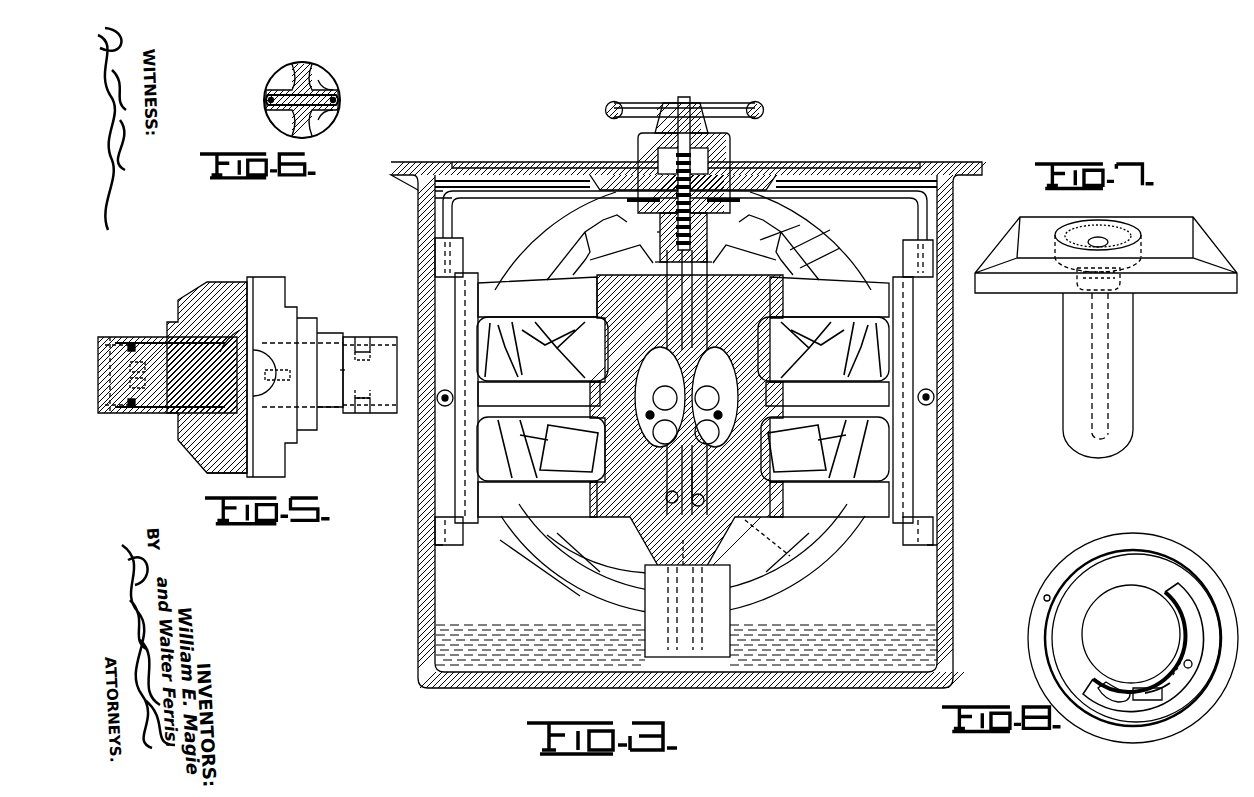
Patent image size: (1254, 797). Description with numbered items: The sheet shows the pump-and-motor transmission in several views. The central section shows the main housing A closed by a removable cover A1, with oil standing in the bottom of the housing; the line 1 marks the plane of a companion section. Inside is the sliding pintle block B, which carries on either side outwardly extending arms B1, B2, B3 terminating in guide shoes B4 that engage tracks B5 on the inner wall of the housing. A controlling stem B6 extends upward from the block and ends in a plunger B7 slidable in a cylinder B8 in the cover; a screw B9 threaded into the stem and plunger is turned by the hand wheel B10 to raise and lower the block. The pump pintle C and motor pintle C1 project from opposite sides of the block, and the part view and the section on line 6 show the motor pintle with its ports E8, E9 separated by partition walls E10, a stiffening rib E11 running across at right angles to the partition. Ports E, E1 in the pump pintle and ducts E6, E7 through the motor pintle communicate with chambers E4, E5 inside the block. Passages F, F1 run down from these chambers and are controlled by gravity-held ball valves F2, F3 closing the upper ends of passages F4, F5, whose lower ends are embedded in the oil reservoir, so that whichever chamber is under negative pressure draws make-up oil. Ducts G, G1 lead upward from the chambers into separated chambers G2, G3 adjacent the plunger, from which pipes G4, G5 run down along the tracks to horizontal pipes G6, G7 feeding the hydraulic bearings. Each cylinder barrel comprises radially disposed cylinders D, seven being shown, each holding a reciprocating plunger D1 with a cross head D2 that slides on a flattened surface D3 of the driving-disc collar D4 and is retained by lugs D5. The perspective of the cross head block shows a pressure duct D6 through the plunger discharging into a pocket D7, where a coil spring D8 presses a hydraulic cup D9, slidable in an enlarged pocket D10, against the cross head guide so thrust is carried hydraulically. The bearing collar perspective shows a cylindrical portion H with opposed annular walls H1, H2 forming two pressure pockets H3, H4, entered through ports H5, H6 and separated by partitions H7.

In FIG. 3, the section line 1- 1 is at (683, 100).
In FIG. 5, the section line 6— 6 is at (355, 453).
In FIG. 3, the main housing A is at (952, 503).
In FIG. 3, the removable cover A1 is at (818, 168).
In FIG. 3, the sliding pintle block B is at (742, 347).
In FIG. 5, the sliding pintle block B is at (272, 315).
In FIG. 3, the outwardly extending arm B1 is at (683, 297).
In FIG. 3, the outwardly extending arm B2 is at (545, 385).
In FIG. 3, the outwardly extending arm B3 is at (683, 499).
In FIG. 3, the guide shoe B4 is at (470, 274).
In FIG. 3, the track B5 is at (452, 258).
In FIG. 3, the controlling system B6 is at (657, 226).
In FIG. 3, the plunger B7 is at (712, 168).
In FIG. 5, the plunger B7 is at (272, 390).
In FIG. 3, the cylinder B8 is at (690, 165).
In FIG. 3, the screw B9 is at (638, 152).
In FIG. 3, the hand wheel B10 is at (612, 103).
In FIG. 5, the pump pintle C is at (105, 337).
In FIG. 5, the motor pintle C1 is at (385, 340).
In FIG. 6, the motor pintle C1 is at (276, 112).
In FIG. 3, the pump or motor cylinder D is at (683, 402).
In FIG. 3, the plunger D1 is at (568, 353).
In FIG. 7, the plunger D1 is at (1125, 322).
In FIG. 3, the cross head D2 is at (812, 268).
In FIG. 7, the cross head D2 is at (1180, 215).
In FIG. 3, the flattened surface D3 is at (792, 250).
In FIG. 3, the collar D4 is at (540, 558).
In FIG. 3, the lug D5 is at (770, 238).
In FIG. 7, the pressure duct D6 is at (1105, 364).
In FIG. 7, the pocket D7 is at (1077, 280).
In FIG. 7, the coil spring D8 is at (1120, 280).
In FIG. 7, the hydraulic cup D9 is at (1112, 228).
In FIG. 7, the enlarged pocket D10 is at (1050, 237).
In FIG. 3, the port E is at (686, 430).
In FIG. 5, the port E is at (142, 340).
In FIG. 5, the port E1 is at (140, 415).
In FIG. 3, the chamber E4 is at (660, 397).
In FIG. 5, the chamber E4 is at (205, 300).
In FIG. 3, the chamber E5 is at (715, 397).
In FIG. 5, the chamber E5 is at (210, 468).
In FIG. 3, the duct E6 is at (660, 432).
In FIG. 3, the duct E7 is at (712, 432).
In FIG. 5, the port E8 is at (350, 345).
In FIG. 6, the port E8 is at (282, 80).
In FIG. 5, the port E9 is at (362, 402).
In FIG. 6, the port E9 is at (322, 78).
In FIG. 5, the partition wall E10 is at (344, 385).
In FIG. 6, the partition wall E10 is at (300, 63).
In FIG. 6, the rib E11 is at (328, 98).
In FIG. 3, the passage F is at (705, 472).
In FIG. 3, the passage F1 is at (704, 500).
In FIG. 3, the ball valve F2 is at (666, 497).
In FIG. 3, the ball valve F3 is at (767, 548).
In FIG. 3, the passage F4 is at (668, 606).
In FIG. 3, the passage F5 is at (700, 547).
In FIG. 3, the duct G is at (657, 261).
In FIG. 3, the duct G1 is at (712, 261).
In FIG. 3, the chamber G2 is at (620, 176).
In FIG. 3, the chamber G3 is at (745, 178).
In FIG. 3, the pipe G4 is at (488, 200).
In FIG. 3, the pipe G5 is at (440, 208).
In FIG. 3, the horizontally disposed pipe G6 is at (445, 408).
In FIG. 3, the horizontally disposed pipe G7 is at (934, 397).
In FIG. 8, the cylindrical portion H is at (1092, 550).
In FIG. 8, the annular wall H1 is at (1112, 590).
In FIG. 8, the annular wall H2 is at (1138, 684).
In FIG. 8, the pressure pocket H3 is at (1115, 702).
In FIG. 8, the pressure pocket H4 is at (1165, 697).
In FIG. 8, the port H5 is at (1119, 638).
In FIG. 8, the port H6 is at (1190, 670).
In FIG. 8, the partition H7 is at (1138, 702).